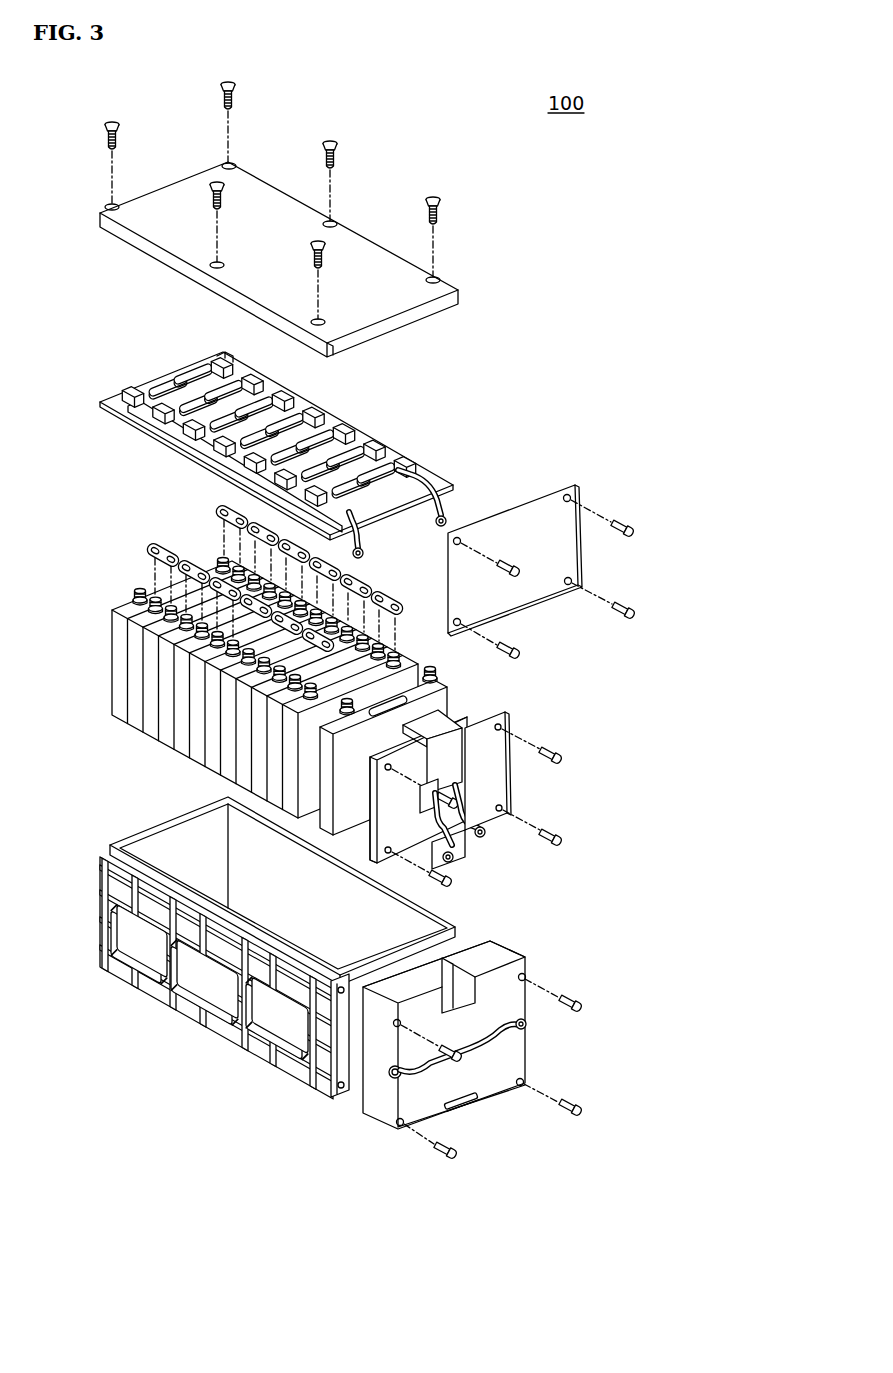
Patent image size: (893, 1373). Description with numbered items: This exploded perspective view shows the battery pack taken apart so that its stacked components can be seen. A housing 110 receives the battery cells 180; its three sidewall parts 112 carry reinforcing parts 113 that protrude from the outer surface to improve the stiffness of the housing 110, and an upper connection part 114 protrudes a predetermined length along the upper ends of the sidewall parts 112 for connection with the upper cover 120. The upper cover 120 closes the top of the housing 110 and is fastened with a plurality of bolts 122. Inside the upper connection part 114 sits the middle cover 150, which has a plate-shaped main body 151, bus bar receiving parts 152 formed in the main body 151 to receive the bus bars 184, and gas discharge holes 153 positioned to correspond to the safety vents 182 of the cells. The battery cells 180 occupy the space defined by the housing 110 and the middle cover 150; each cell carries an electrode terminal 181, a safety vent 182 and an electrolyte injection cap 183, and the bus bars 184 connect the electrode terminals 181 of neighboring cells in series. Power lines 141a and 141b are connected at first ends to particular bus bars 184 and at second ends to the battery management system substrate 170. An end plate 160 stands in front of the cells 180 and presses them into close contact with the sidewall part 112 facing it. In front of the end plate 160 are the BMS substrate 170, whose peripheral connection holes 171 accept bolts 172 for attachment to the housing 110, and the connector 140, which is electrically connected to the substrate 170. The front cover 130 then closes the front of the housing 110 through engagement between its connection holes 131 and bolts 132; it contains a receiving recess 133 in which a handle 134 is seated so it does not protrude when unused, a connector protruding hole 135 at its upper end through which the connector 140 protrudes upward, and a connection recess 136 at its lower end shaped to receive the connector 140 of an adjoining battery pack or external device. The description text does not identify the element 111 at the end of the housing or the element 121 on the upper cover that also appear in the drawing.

The housing 110 is at (262, 962).
The end plate 111 is at (346, 1092).
The sidewall part 112 is at (209, 982).
The reinforcing parts 113 is at (216, 978).
The upper connection part 114 is at (141, 828).
The upper cover 120 is at (362, 242).
The fastening hole 121 is at (437, 278).
The bolts 122 is at (436, 196).
The front cover 130 is at (487, 1028).
The connection holes 131 is at (528, 975).
The bolts 132 is at (570, 1000).
The receiving recess 133 is at (433, 1080).
The handle 134 is at (488, 1075).
The connector protruding hole 135 is at (466, 945).
The connection recess 136 is at (470, 1106).
The connector 140 is at (452, 718).
The power line 141a is at (362, 528).
The power line 141b is at (446, 496).
The middle cover 150 is at (285, 427).
The main body 151 is at (210, 364).
The bus bar receiving parts 152 is at (227, 356).
The gas discharge holes 153 is at (170, 378).
The end plate 160 is at (572, 558).
The BMS substrate 170 is at (478, 771).
The connection holes 171 is at (503, 806).
The bolts 172 is at (551, 831).
The battery cells 180 is at (246, 681).
The electrode terminal 181 is at (134, 590).
The safety vent 182 is at (164, 588).
The electrolyte injection cap 183 is at (213, 576).
The bus bars 184 is at (222, 512).